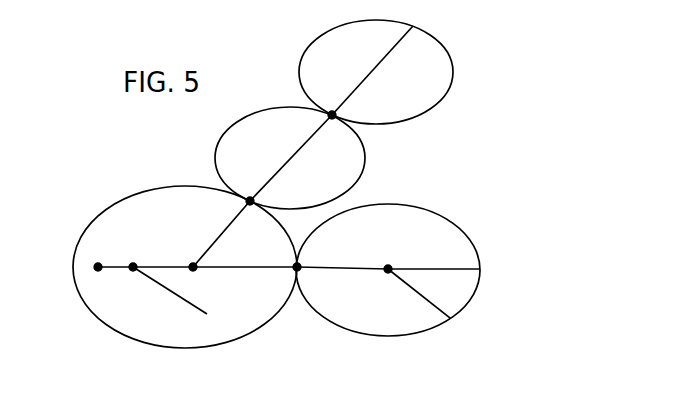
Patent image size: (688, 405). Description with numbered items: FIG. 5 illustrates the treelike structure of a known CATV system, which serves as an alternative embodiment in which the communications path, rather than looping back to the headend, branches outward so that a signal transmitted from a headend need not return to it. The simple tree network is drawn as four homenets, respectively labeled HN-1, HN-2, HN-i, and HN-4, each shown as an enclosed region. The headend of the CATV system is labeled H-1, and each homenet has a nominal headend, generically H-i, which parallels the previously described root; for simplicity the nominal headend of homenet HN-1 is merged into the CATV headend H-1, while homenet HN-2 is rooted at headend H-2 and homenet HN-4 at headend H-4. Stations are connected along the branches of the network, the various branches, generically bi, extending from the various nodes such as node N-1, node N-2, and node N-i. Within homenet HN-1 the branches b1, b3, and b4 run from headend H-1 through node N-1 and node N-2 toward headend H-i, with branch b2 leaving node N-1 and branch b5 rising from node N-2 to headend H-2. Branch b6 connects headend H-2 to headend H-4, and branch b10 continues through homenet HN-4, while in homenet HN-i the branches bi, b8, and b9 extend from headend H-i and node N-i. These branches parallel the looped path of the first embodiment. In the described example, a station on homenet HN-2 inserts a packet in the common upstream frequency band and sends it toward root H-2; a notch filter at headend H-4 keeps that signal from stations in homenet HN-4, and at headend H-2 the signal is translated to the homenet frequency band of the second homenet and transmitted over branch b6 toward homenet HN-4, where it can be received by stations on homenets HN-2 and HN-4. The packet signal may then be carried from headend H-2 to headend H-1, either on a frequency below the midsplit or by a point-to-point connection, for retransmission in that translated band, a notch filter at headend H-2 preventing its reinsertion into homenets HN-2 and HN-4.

The homenet HN-1 is at (143, 193).
The homenet HN-2 is at (365, 151).
The homenet HN-4 is at (450, 62).
The homenet HN-i is at (460, 228).
The headend H-1 is at (100, 270).
The headend H-2 is at (254, 201).
The headend H-4 is at (336, 115).
The nominal headend H-i is at (300, 270).
The node N-1 is at (134, 263).
The node N-2 is at (194, 271).
The node N-i is at (389, 265).
The branch b1 is at (115, 252).
The branch b2 is at (170, 294).
The branch b3 is at (163, 252).
The branch b4 is at (245, 283).
The branch b5 is at (224, 234).
The branch b6 is at (297, 158).
The branch b8 is at (434, 254).
The branch b9 is at (419, 297).
The branch b10 is at (380, 70).
The branch bi is at (342, 253).